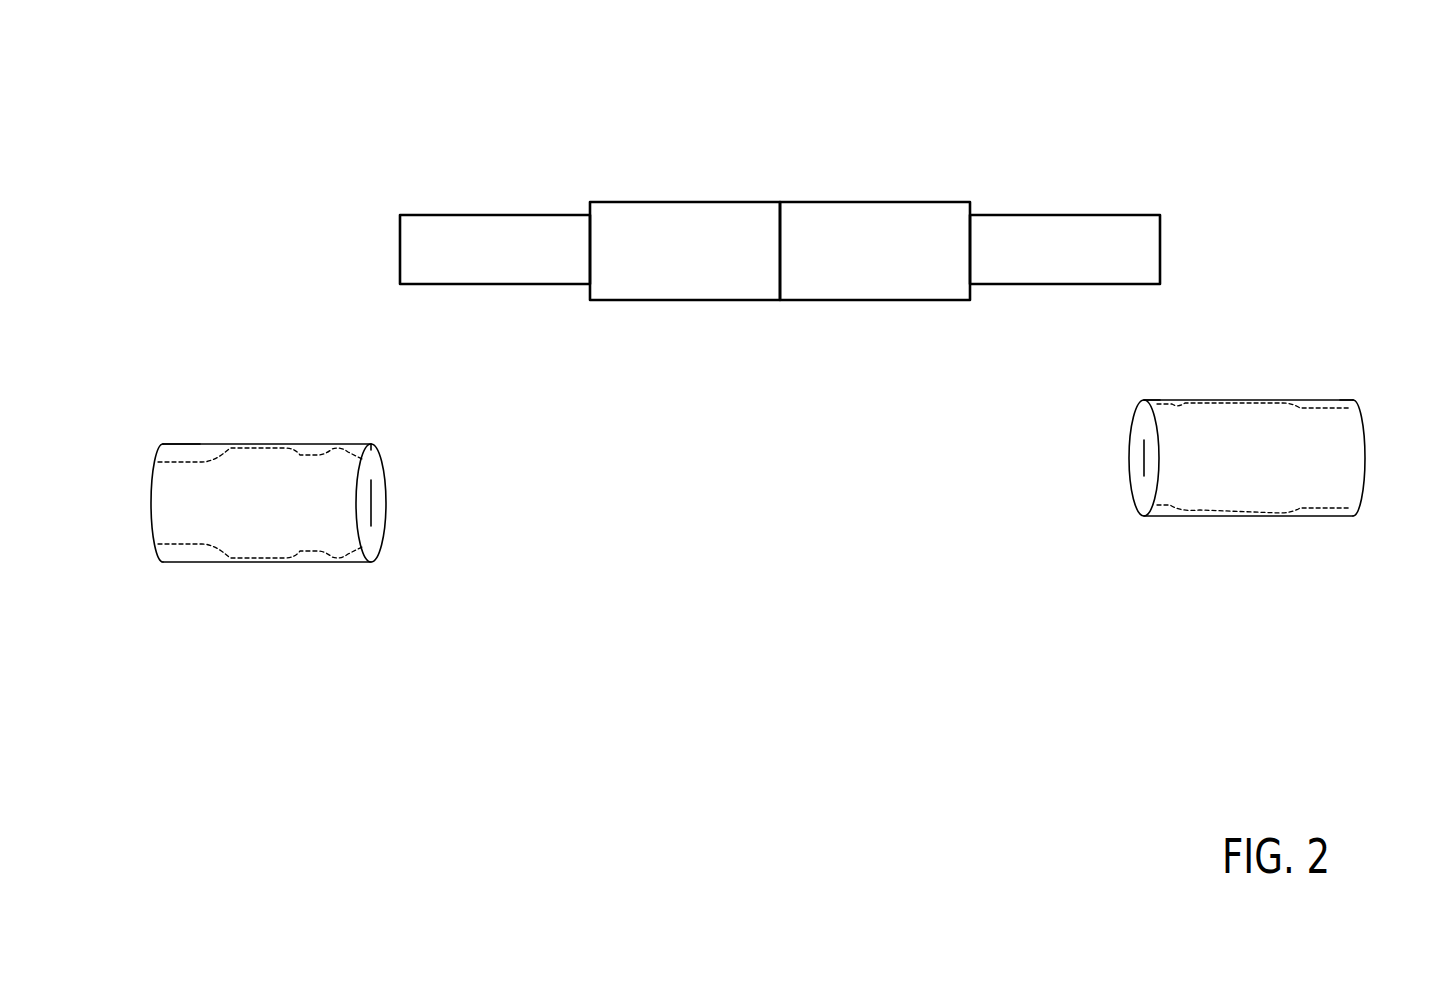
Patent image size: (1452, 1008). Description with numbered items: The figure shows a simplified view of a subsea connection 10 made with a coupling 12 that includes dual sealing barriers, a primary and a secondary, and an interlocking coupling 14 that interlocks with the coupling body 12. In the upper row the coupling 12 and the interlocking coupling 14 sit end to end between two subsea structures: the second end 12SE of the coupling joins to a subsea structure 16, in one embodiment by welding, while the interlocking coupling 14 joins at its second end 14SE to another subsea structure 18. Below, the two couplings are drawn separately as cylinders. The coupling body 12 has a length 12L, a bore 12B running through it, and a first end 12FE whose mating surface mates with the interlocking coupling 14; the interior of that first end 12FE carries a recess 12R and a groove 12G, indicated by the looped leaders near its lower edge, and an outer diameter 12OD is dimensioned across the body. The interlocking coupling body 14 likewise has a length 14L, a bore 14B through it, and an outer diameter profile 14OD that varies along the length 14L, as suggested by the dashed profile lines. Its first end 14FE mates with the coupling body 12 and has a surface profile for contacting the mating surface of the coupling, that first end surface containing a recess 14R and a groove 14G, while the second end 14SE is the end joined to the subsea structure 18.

The subsea connection 10 is at (980, 122).
The coupling 12 is at (1094, 403).
The interlocking coupling 14 is at (450, 403).
The subsea structure 16 is at (1057, 263).
The subsea structure 18 is at (487, 263).
The second end of the interlocking coupling 14SE is at (165, 438).
The first end of the interlocking coupling 14FE is at (373, 436).
The bore 14B is at (374, 503).
The outer diameter profile 14OD is at (136, 457).
The length 14L is at (179, 588).
The recess 14R is at (314, 628).
The groove 14G is at (361, 628).
The first end of the coupling 12FE is at (1138, 392).
The second end of the coupling 12SE is at (1348, 392).
The bore 12B is at (1149, 461).
The outer diameter of segment 12 12OD is at (1382, 410).
The length 12L is at (1162, 544).
The groove 12G is at (1173, 506).
The recess 12R is at (1213, 510).